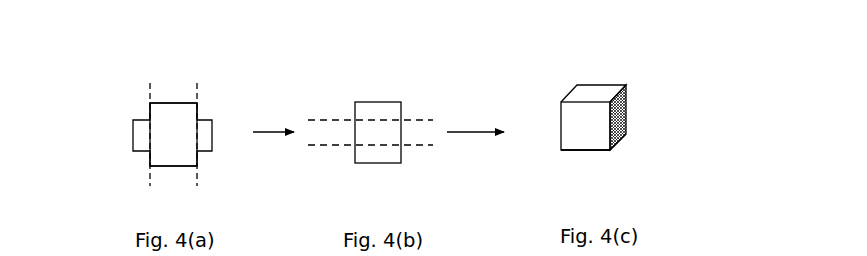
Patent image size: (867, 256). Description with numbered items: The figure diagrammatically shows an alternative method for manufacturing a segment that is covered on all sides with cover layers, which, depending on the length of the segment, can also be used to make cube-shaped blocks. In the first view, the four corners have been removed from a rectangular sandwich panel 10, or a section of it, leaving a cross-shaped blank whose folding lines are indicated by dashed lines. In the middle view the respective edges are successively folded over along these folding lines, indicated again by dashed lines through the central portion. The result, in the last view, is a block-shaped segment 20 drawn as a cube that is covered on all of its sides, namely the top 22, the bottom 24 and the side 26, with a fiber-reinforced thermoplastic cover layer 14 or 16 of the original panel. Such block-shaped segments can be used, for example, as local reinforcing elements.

In FIG. 4A, the rectangular sandwich panel 10 is at (174, 128).
In FIG. 4A, the fiber-reinforced thermoplastic cover layer 14 is at (183, 123).
In FIG. 4B, the fiber-reinforced thermoplastic cover layer 14 is at (380, 117).
In FIG. 4C, the fiber-reinforced thermoplastic cover layer 14 is at (560, 117).
In FIG. 4C, the fiber-reinforced thermoplastic cover layer 16 is at (585, 150).
In FIG. 4C, the block-shaped segment 20 is at (638, 115).
In FIG. 4C, the top side 22 is at (610, 78).
In FIG. 4C, the bottom side 24 is at (599, 161).
In FIG. 4C, the side 26 is at (624, 116).